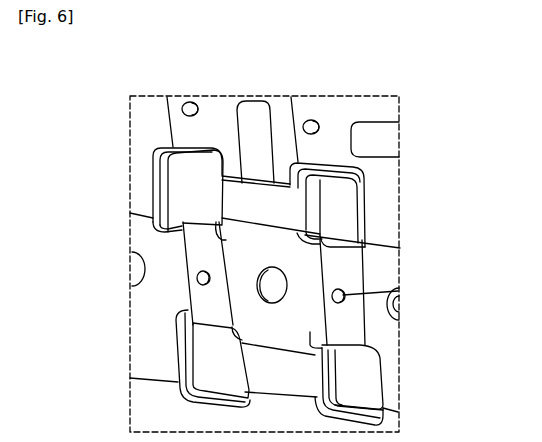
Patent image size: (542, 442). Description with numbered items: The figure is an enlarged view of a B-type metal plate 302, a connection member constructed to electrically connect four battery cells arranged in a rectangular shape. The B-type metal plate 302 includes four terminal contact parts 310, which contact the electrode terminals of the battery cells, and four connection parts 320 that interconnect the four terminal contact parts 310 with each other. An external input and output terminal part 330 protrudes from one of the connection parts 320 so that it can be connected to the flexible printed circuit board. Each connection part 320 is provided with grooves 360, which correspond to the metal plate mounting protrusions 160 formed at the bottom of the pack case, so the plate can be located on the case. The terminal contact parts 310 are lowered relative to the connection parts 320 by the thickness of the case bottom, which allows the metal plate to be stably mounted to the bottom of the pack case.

The B-type metal plate 302 is at (329, 133).
The terminal contact part 310 is at (153, 190).
The connection part 320 is at (190, 301).
The external input and output terminal part 330 is at (245, 105).
The metal plate mounting protrusion 160 is at (343, 291).
The groove 360 is at (400, 306).